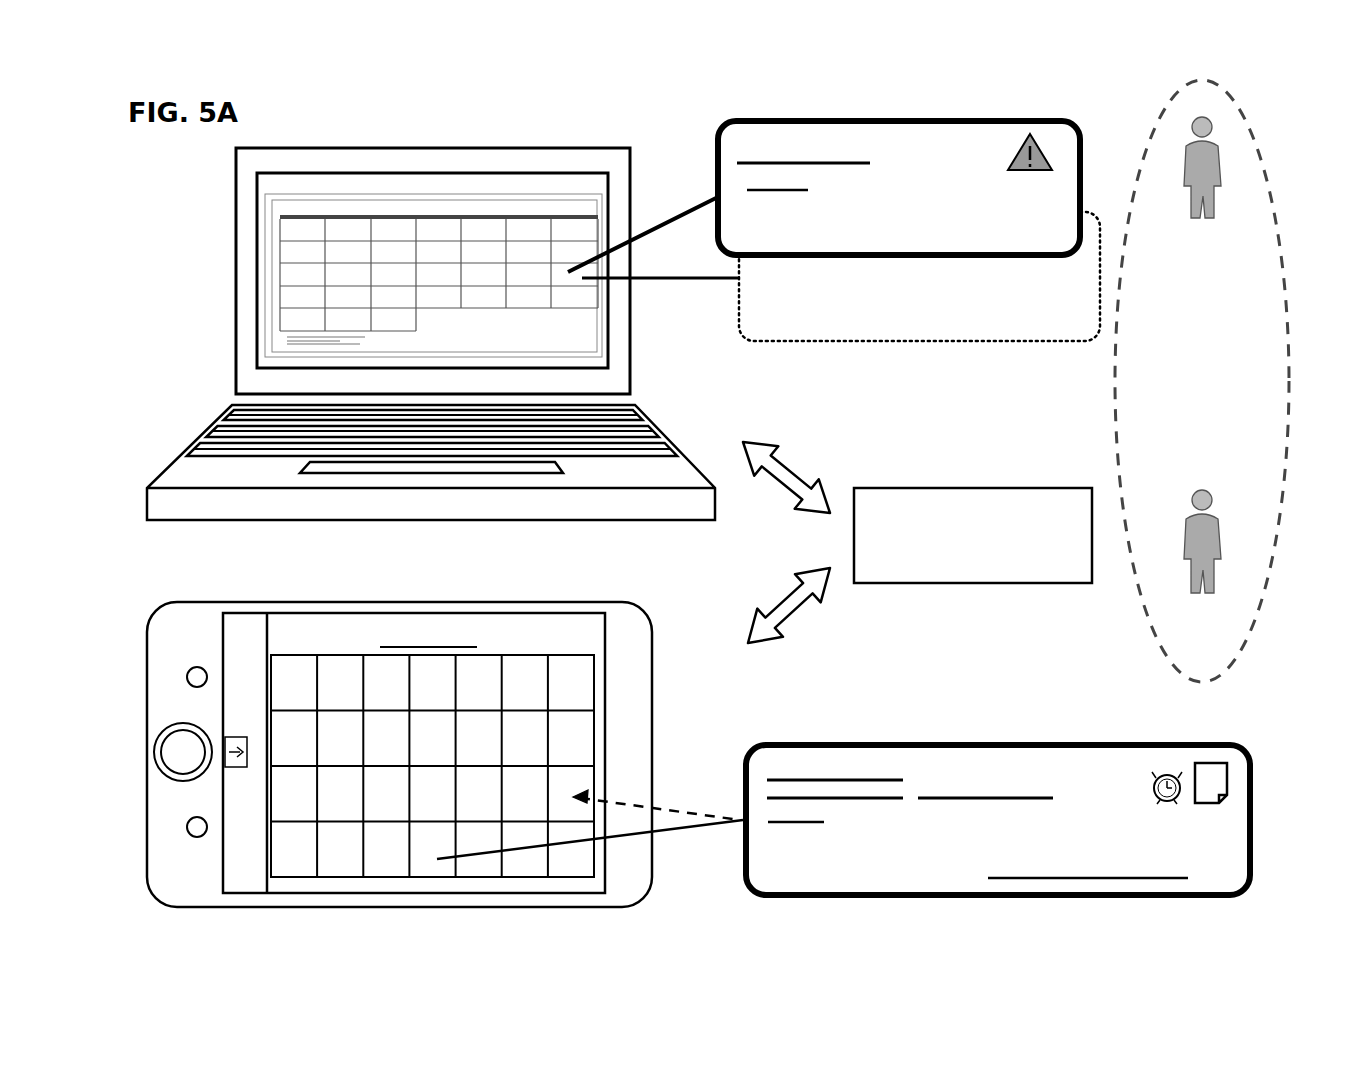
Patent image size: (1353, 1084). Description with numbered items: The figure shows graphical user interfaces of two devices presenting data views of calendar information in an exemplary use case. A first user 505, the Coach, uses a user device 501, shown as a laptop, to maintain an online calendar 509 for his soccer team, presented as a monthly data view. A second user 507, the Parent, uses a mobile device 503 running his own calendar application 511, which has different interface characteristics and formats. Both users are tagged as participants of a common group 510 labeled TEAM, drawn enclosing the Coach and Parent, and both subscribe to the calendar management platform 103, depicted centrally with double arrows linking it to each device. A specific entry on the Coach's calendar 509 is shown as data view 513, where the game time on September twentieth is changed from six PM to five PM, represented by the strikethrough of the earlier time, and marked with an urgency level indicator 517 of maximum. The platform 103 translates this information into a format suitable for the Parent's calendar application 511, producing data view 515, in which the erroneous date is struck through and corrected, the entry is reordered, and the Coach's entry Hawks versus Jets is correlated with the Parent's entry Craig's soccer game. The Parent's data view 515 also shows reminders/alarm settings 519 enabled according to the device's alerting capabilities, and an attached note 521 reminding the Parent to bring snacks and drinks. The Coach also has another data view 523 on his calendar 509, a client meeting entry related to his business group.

The user device 501 is at (236, 322).
The mobile device 503 is at (655, 713).
The first user 505 is at (1183, 145).
The second user 507 is at (1190, 512).
The online calendar 509 is at (462, 183).
The common group 510 is at (1115, 395).
The calendar application 511 is at (332, 635).
The data view 513 is at (720, 126).
The data view 515 is at (983, 742).
The urgency level indicator 517 is at (1003, 152).
The reminders/alarm settings 519 is at (1167, 757).
The note 521 is at (1207, 755).
The data view 523 is at (737, 336).
The calendar management platform 103 is at (1035, 563).